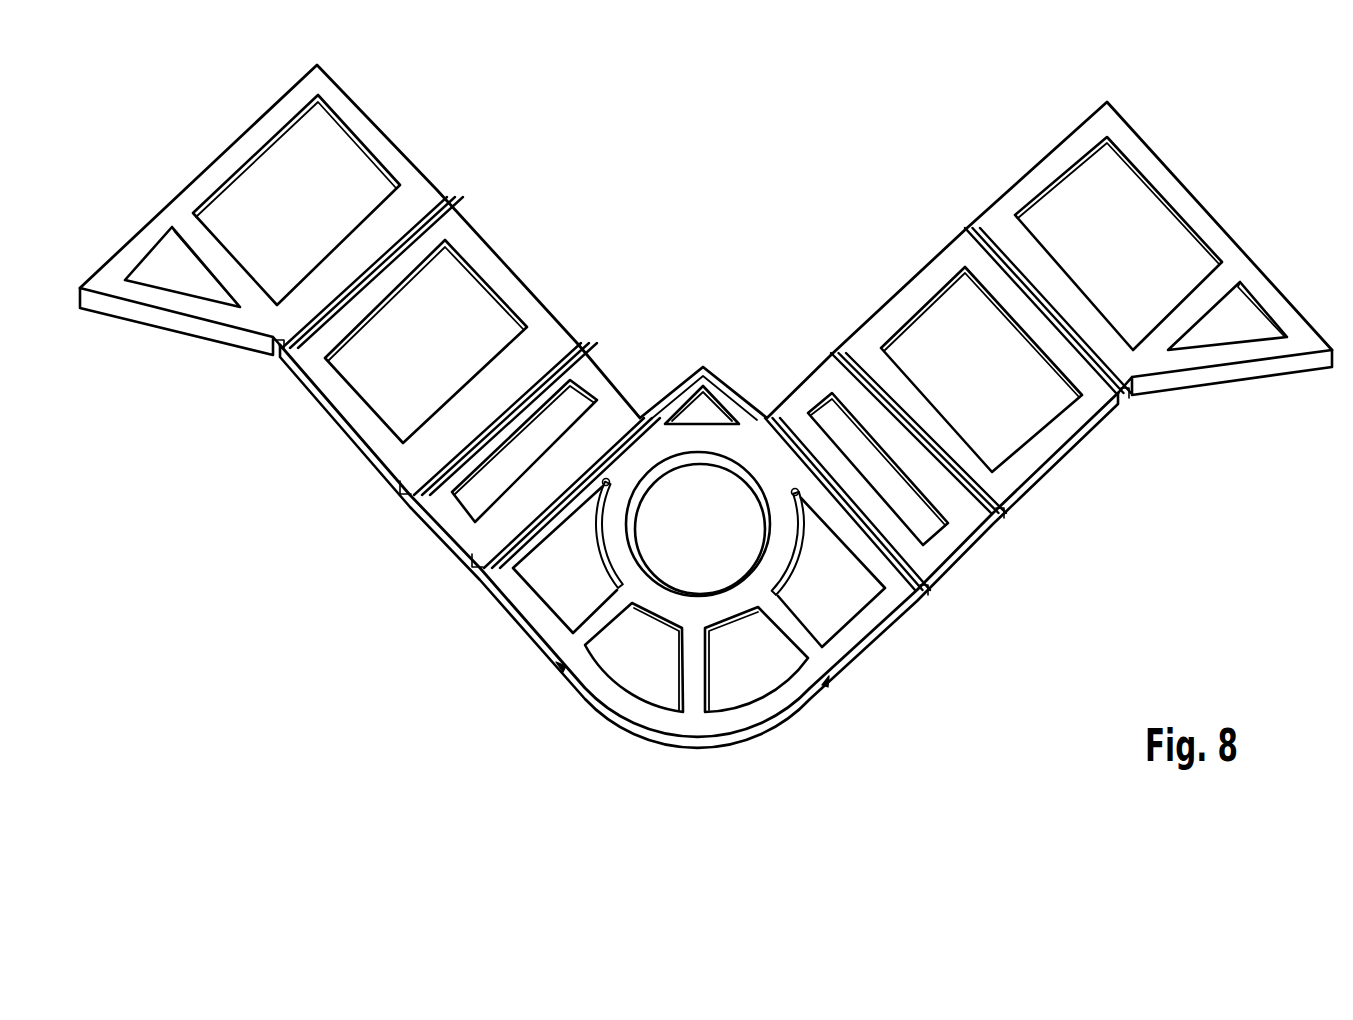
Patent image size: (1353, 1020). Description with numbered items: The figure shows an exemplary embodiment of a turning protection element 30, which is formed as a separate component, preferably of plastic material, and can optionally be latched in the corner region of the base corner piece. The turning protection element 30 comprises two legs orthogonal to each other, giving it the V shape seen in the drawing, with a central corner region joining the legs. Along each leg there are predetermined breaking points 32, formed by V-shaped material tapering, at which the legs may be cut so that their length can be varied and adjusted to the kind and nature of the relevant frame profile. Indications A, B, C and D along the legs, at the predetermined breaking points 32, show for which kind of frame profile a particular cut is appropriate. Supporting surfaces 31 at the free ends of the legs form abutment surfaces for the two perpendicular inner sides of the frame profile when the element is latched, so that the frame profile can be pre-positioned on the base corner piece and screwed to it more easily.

The turning protection element 30 is at (636, 191).
The supporting surface 31 is at (237, 138).
The predetermined breaking point 32 is at (448, 196).